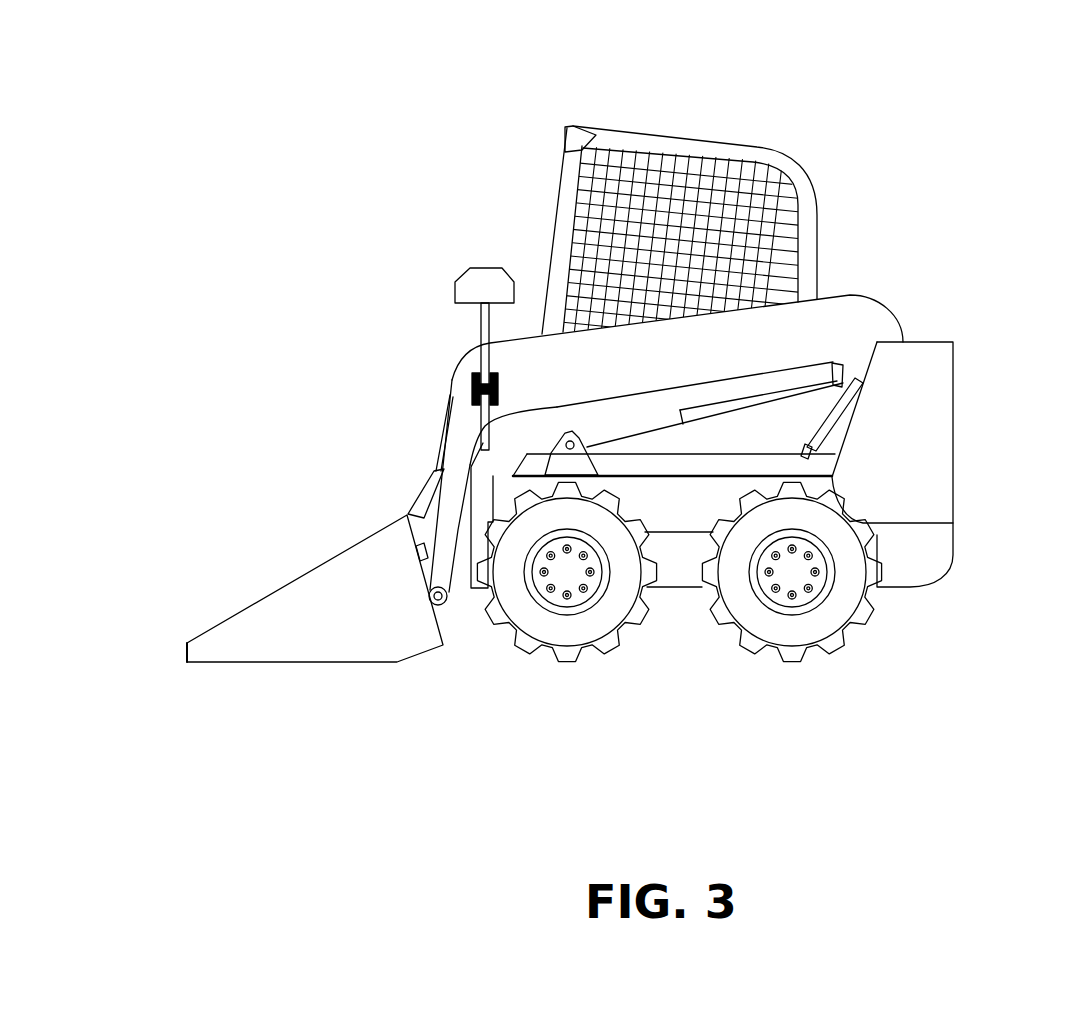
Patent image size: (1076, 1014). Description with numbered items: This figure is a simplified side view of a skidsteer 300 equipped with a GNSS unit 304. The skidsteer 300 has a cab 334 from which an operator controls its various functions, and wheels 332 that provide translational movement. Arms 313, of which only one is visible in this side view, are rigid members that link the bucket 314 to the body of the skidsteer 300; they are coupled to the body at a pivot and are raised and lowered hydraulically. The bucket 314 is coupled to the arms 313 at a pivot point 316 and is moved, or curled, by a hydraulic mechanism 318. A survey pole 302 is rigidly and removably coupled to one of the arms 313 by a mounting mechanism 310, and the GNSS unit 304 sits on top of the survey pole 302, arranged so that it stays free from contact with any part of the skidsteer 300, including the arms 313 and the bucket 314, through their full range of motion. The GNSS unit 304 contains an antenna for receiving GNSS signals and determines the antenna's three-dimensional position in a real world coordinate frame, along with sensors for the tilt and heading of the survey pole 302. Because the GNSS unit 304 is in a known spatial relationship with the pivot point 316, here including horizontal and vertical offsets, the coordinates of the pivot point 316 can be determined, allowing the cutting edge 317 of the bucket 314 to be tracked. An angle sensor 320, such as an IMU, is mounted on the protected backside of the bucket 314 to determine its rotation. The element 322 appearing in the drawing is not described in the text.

The skidsteer 300 is at (940, 58).
The survey pole 302 is at (478, 320).
The GNSS unit 304 is at (470, 280).
The mounting mechanism 310 is at (472, 384).
The arms 313 is at (852, 315).
The bucket 314 is at (297, 652).
The pivot point 316 is at (452, 598).
The cutting edge 317 is at (183, 655).
The hydraulic mechanism 318 is at (435, 468).
The angle sensor 320 is at (413, 543).
The lift cylinder boom 322 is at (827, 412).
The wheels 332 is at (845, 598).
The cab 334 is at (728, 150).